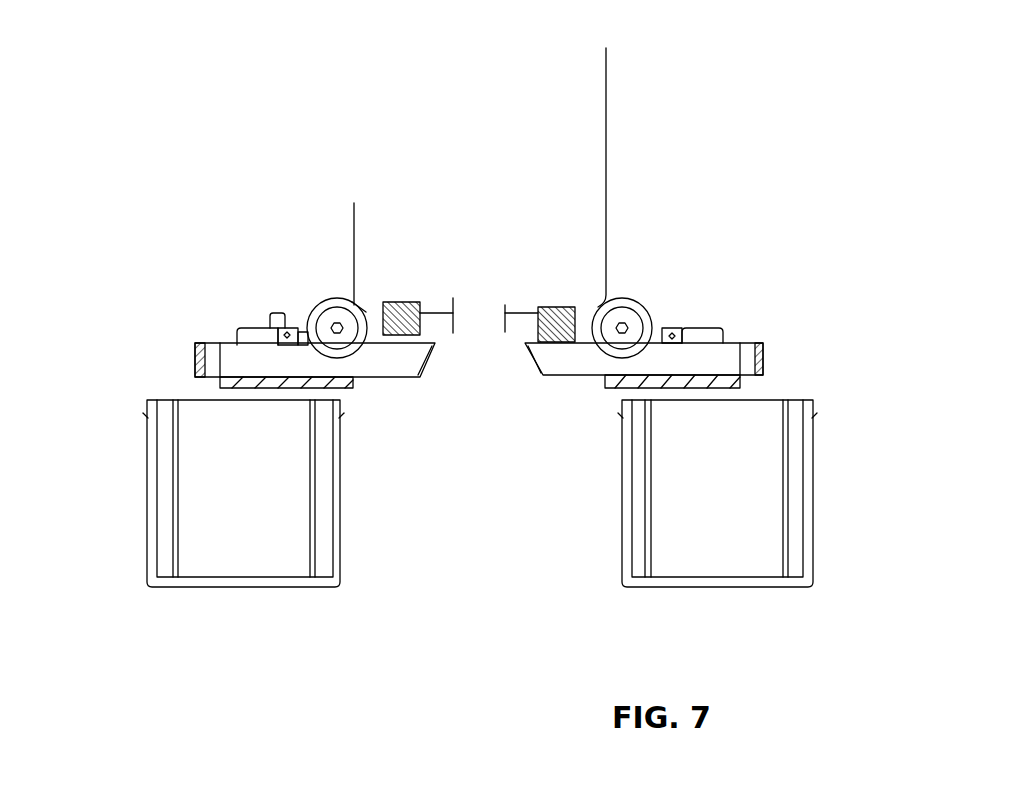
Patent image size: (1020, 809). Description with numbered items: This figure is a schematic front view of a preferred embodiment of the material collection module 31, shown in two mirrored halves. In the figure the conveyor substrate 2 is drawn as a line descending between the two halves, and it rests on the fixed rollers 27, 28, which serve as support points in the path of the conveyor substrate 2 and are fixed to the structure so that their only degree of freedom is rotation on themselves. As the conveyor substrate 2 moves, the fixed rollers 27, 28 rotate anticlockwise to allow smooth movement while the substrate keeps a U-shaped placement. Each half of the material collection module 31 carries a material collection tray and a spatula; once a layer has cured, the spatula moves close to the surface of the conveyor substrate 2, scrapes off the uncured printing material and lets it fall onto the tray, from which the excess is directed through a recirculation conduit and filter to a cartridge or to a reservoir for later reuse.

The conveyor substrate 2 is at (609, 145).
The fixed roller 27 is at (323, 313).
The fixed roller 28 is at (643, 307).
The material collection module 31 is at (421, 276).